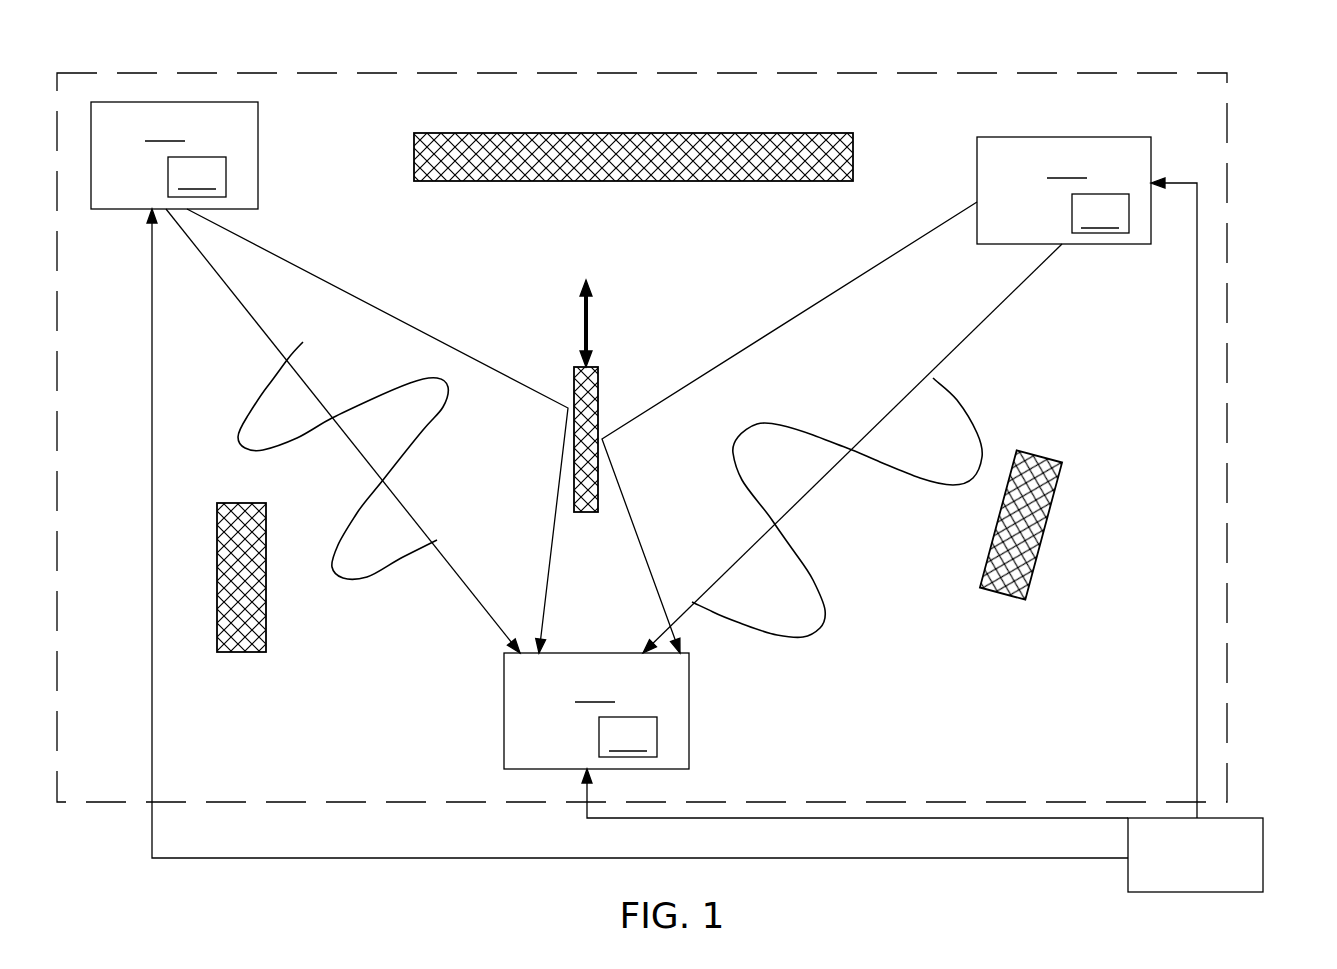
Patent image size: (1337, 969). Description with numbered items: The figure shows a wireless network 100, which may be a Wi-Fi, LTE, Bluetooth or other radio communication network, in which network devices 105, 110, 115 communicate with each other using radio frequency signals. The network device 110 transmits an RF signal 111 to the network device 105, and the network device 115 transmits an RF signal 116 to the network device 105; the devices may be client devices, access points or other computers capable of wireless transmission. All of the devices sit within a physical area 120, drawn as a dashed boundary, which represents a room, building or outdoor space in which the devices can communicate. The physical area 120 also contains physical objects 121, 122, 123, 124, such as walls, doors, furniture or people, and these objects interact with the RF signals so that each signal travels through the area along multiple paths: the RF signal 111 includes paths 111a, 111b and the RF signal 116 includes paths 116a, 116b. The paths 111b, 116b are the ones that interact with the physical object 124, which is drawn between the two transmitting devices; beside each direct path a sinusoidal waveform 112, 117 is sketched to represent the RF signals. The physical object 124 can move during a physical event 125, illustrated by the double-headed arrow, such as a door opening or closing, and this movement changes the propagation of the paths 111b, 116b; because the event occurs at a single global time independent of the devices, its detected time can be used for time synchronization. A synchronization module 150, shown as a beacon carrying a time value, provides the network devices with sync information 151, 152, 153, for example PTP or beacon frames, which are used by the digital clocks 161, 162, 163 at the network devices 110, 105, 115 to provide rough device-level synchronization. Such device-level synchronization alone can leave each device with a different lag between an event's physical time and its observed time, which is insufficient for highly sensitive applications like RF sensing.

The network 100 is at (1188, 57).
The network device 105 is at (596, 711).
The network device 110 is at (174, 155).
The RF signal 111 is at (367, 431).
The path 111a is at (250, 318).
The path 111b is at (293, 263).
The RF signal waveform 112 is at (357, 513).
The network device 115 is at (1064, 190).
The RF signal 116 is at (843, 427).
The path 116a is at (950, 350).
The path 116b is at (787, 320).
The RF signal waveform 117 is at (808, 565).
The physical area 120 is at (615, 73).
The physical object 121 is at (414, 152).
The physical object 122 is at (1002, 597).
The physical object 123 is at (238, 652).
The physical object 124 is at (584, 512).
The physical event 125 is at (593, 293).
The synchronization module 150 is at (1263, 845).
The sync information 151 is at (1037, 858).
The sync information 152 is at (1005, 818).
The sync information 153 is at (1197, 713).
The clock 161 is at (197, 177).
The clock 162 is at (628, 737).
The clock 163 is at (1100, 213).